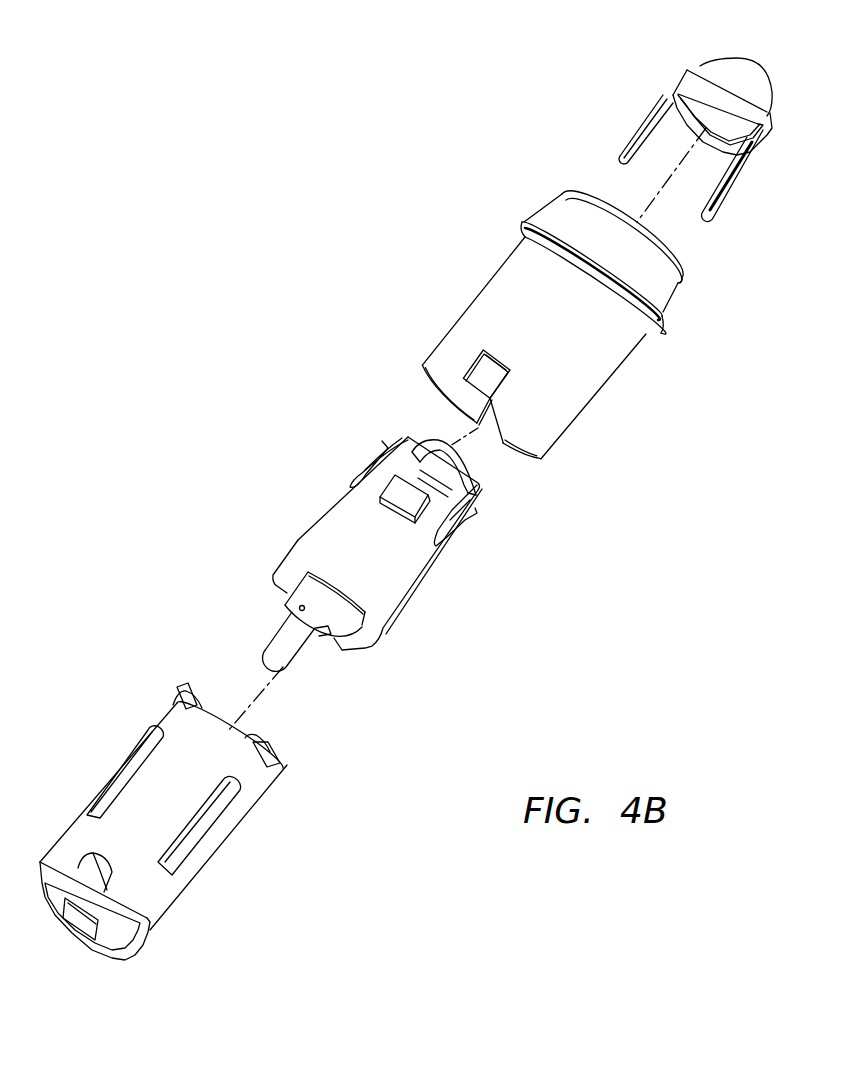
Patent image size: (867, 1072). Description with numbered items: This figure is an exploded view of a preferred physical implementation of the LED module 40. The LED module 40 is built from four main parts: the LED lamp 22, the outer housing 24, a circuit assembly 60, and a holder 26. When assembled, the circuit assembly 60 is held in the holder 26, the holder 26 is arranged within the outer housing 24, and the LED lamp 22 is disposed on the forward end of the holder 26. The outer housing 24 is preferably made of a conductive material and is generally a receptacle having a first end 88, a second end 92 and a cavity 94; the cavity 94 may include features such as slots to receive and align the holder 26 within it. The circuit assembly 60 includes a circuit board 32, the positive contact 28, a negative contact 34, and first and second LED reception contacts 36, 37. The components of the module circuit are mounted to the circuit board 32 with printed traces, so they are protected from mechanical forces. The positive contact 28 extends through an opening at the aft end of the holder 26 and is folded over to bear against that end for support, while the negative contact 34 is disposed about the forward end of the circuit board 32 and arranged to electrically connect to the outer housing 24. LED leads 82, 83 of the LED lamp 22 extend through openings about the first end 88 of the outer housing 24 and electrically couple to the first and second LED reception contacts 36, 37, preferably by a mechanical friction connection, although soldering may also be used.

The LED lamp 22 is at (690, 70).
The outer housing 24 is at (493, 277).
The holder 26 is at (263, 802).
The positive contact 28 is at (300, 657).
The circuit board 32 is at (413, 600).
The negative contact 34 is at (468, 460).
The first LED reception contact 36 is at (372, 463).
The second LED reception contact 37 is at (467, 515).
The LED module 40 is at (378, 172).
The circuit assembly 60 is at (309, 528).
The LED lead 82 is at (627, 132).
The LED lead 83 is at (733, 197).
The first end 88 is at (683, 267).
The second end 92 is at (423, 367).
The cavity 94 is at (458, 390).